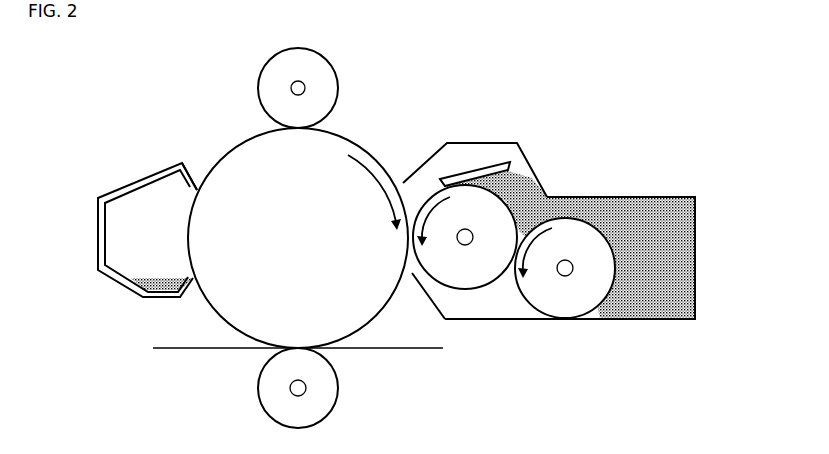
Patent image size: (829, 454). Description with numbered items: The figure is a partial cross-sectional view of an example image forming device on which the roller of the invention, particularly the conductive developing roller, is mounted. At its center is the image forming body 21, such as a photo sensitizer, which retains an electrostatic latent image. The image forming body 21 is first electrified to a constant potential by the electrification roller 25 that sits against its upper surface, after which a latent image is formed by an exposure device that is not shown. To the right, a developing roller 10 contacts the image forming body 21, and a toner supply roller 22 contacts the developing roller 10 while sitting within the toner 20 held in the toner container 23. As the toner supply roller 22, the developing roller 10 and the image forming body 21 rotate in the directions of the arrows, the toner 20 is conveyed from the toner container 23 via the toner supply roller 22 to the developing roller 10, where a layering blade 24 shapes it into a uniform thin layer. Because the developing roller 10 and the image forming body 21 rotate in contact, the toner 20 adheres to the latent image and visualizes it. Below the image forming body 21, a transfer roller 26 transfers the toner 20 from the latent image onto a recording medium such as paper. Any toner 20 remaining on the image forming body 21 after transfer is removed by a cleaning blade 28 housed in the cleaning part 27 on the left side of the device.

The developing roller 10 is at (470, 267).
The toner 20 is at (622, 220).
The image forming body 21 is at (243, 160).
The toner supply roller 22 is at (577, 297).
The toner container 23 is at (657, 198).
The layering blade 24 is at (478, 170).
The electrification roller 25 is at (325, 85).
The transfer roller 26 is at (317, 389).
The cleaning part 27 is at (139, 181).
The cleaning blade 28 is at (188, 185).